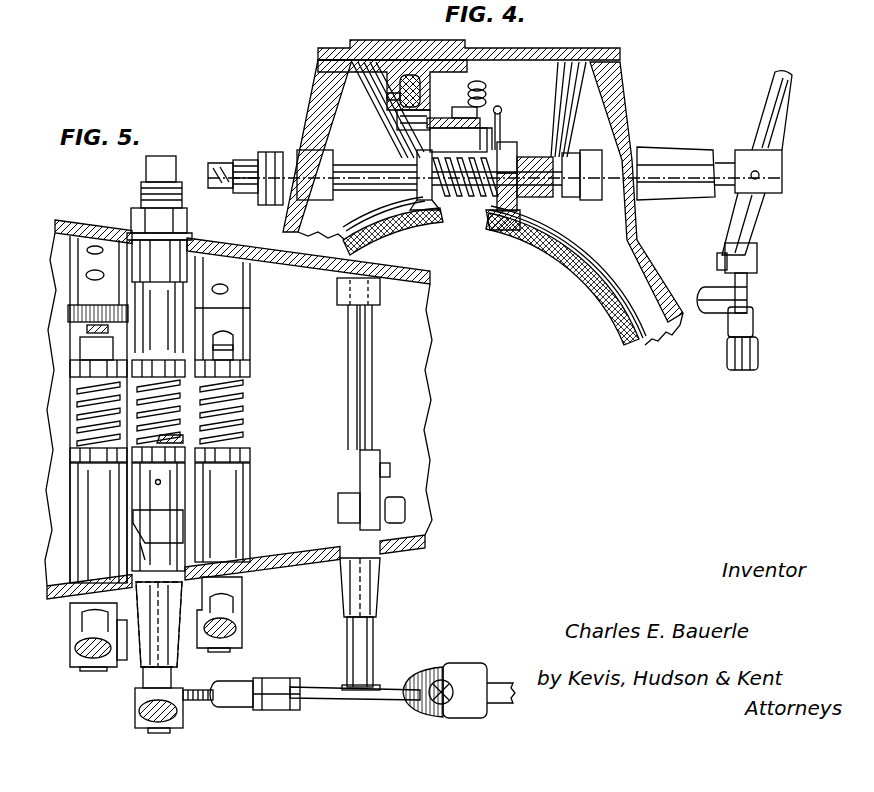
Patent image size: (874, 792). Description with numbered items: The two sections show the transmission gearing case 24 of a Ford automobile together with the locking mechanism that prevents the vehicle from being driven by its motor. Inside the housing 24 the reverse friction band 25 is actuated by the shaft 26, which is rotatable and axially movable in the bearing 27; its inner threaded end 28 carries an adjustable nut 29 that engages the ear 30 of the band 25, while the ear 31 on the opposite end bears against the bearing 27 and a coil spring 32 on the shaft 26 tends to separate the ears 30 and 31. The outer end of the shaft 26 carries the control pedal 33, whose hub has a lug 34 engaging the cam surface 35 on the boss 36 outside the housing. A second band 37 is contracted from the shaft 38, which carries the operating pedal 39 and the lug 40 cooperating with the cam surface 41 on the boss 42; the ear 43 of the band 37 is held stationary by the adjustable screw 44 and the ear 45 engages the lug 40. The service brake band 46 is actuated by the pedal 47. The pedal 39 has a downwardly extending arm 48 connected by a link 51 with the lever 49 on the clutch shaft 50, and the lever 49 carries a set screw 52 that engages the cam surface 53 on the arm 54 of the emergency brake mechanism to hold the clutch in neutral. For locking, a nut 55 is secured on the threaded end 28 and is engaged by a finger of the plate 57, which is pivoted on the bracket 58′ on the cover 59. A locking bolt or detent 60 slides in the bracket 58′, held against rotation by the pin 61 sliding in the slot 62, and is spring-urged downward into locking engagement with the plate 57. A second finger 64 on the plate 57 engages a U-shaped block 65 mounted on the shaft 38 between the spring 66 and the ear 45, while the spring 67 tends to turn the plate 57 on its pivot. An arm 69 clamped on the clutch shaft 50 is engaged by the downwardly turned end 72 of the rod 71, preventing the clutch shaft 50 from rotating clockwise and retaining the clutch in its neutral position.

In FIG. 4, the transmission gearing case 24 is at (303, 122).
In FIG. 5, the transmission gearing case 24 is at (276, 565).
In FIG. 5, the reverse friction band 25 is at (62, 518).
In FIG. 5, the shaft 26 is at (85, 422).
In FIG. 5, the bearing 27 is at (98, 523).
In FIG. 5, the threaded end 28 is at (88, 303).
In FIG. 5, the nut 29 is at (80, 350).
In FIG. 5, the ear 30 is at (88, 381).
In FIG. 5, the ear 31 is at (72, 455).
In FIG. 5, the coil spring 32 is at (150, 410).
In FIG. 5, the control pedal 33 is at (75, 650).
In FIG. 5, the lug 34 is at (82, 620).
In FIG. 5, the cam surface 35 is at (78, 628).
In FIG. 5, the boss 36 is at (128, 646).
In FIG. 5, the band 37 is at (190, 312).
In FIG. 4, the shaft 38 is at (520, 212).
In FIG. 5, the shaft 38 is at (172, 412).
In FIG. 4, the operating pedal 39 is at (775, 108).
In FIG. 5, the operating pedal 39 is at (135, 716).
In FIG. 5, the lug 40 is at (160, 530).
In FIG. 5, the cam surface 41 is at (148, 558).
In FIG. 5, the boss 42 is at (185, 553).
In FIG. 4, the ear 43 is at (428, 212).
In FIG. 5, the ear 43 is at (151, 381).
In FIG. 4, the adjustable screw 44 is at (245, 163).
In FIG. 5, the adjustable screw 44 is at (141, 192).
In FIG. 4, the ear 45 is at (510, 142).
In FIG. 5, the ear 45 is at (200, 480).
In FIG. 5, the service brake band 46 is at (236, 344).
In FIG. 5, the pedal 47 is at (243, 635).
In FIG. 4, the arm 48 is at (750, 213).
In FIG. 5, the lever 49 is at (320, 700).
In FIG. 5, the clutch shaft 50 is at (357, 383).
In FIG. 4, the link 51 is at (747, 288).
In FIG. 5, the link 51 is at (196, 702).
In FIG. 5, the set screw 52 is at (435, 688).
In FIG. 5, the cam surface 53 is at (472, 672).
In FIG. 5, the arm 54 is at (500, 703).
In FIG. 5, the nut 55 is at (66, 316).
In FIG. 4, the plate 57 is at (457, 132).
In FIG. 4, the bracket 58′ is at (424, 88).
In FIG. 4, the cover 59 is at (548, 60).
In FIG. 4, the locking bolt 60 is at (405, 128).
In FIG. 4, the pin 61 is at (372, 108).
In FIG. 4, the slot 62 is at (357, 83).
In FIG. 4, the finger 64 is at (495, 140).
In FIG. 5, the finger 64 is at (180, 437).
In FIG. 4, the U-shaped block 65 is at (497, 213).
In FIG. 4, the spring 66 is at (465, 190).
In FIG. 4, the spring 67 is at (487, 92).
In FIG. 5, the arm 69 is at (350, 493).
In FIG. 4, the rod 71 is at (500, 110).
In FIG. 5, the downwardly turned end 72 is at (388, 470).